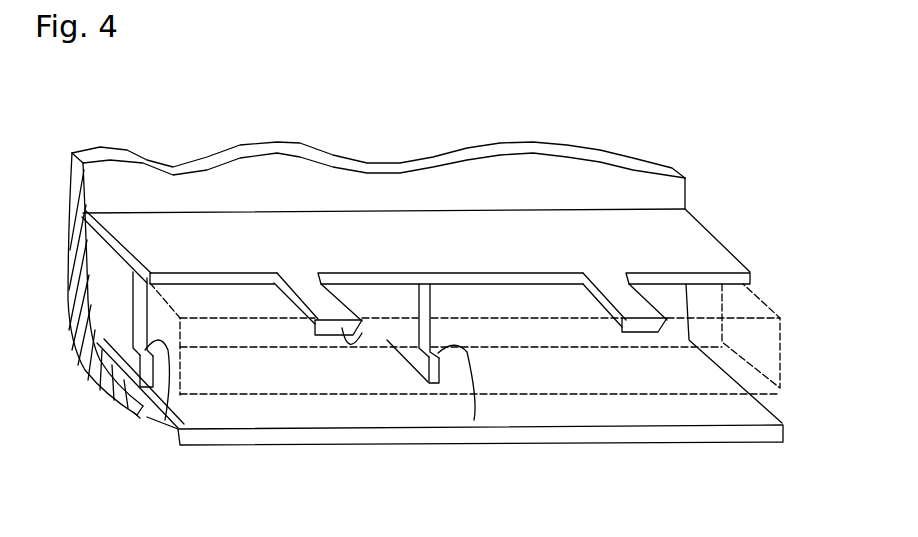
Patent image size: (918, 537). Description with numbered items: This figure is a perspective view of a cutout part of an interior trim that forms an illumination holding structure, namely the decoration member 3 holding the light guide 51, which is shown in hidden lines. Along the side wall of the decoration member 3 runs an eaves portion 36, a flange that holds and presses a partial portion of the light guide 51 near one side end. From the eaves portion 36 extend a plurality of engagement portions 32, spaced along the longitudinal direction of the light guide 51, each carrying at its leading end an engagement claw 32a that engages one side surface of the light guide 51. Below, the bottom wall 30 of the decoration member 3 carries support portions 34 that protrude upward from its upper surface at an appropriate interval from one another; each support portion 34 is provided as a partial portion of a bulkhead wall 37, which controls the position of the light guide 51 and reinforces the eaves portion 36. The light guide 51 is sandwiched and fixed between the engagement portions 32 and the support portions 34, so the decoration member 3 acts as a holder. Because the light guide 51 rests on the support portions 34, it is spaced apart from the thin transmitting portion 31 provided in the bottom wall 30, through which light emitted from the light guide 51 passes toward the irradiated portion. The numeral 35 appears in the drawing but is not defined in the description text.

The decoration member 3 is at (59, 273).
The bottom wall 30 is at (112, 390).
The transmitting portion 31 is at (289, 410).
The engagement portion 32 is at (307, 290).
The engagement claw 32a is at (390, 343).
The support portion 34 is at (165, 420).
The post 35 is at (147, 388).
The eaves portion 36 is at (172, 258).
The bulkhead wall 37 is at (118, 322).
The light guide 51 is at (782, 360).